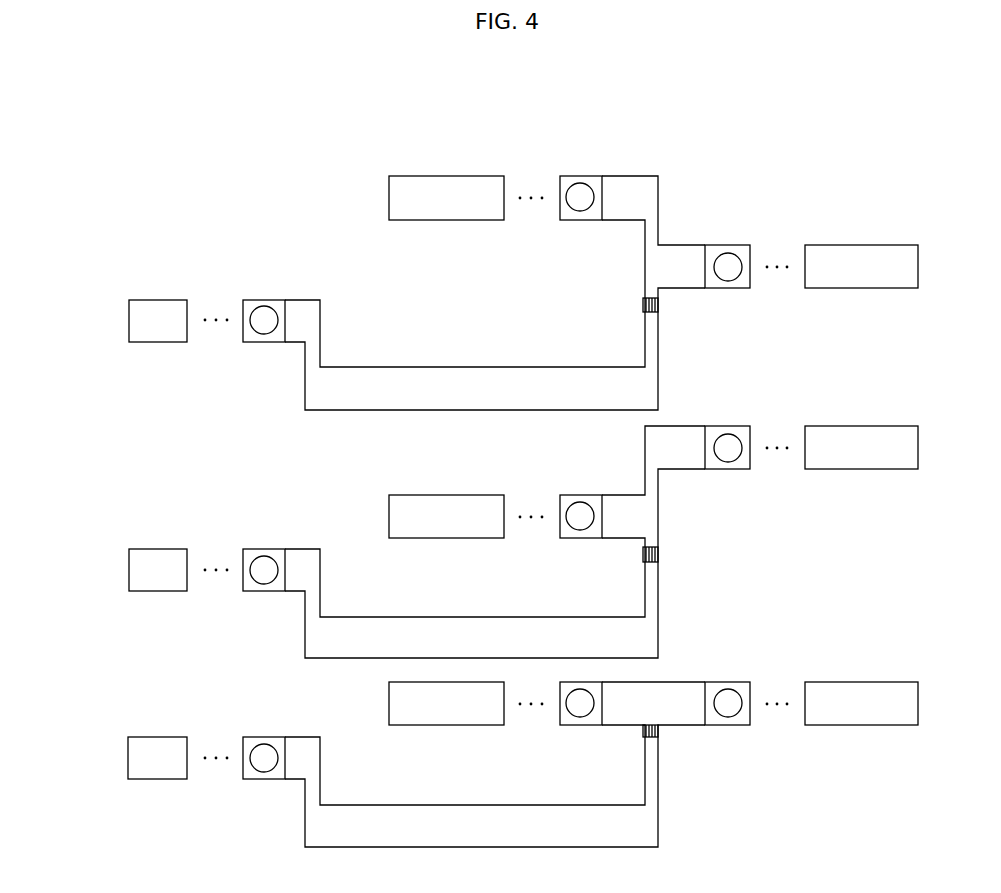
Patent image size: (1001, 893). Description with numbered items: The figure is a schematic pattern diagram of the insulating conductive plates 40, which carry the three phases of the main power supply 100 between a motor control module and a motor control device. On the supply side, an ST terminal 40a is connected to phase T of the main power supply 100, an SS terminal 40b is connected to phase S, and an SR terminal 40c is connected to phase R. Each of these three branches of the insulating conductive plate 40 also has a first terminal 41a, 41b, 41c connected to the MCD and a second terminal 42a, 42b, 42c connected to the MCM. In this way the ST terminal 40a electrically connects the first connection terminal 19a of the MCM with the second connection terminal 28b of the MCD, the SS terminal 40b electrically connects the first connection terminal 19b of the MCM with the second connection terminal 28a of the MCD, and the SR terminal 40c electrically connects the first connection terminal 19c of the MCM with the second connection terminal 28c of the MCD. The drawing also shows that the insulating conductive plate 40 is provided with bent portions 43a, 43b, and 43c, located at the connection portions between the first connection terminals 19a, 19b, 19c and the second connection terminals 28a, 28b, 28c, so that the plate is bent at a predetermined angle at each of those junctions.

The insulating conductive plate 40 is at (687, 155).
The main power supply 100 is at (102, 320).
The ST terminal 40a is at (264, 330).
The SS terminal 40b is at (264, 580).
The SR terminal 40c is at (264, 767).
The first connection terminal 1 19a is at (421, 198).
The first connection terminal 2 19b is at (421, 516).
The first connection terminal 3 19c is at (421, 703).
The second terminal 42a is at (580, 206).
The second terminal 42b is at (580, 525).
The second terminal 42c is at (580, 712).
The first terminal 41a is at (728, 260).
The first terminal 41b is at (728, 441).
The first terminal 41c is at (728, 697).
The bent portion 43a is at (660, 306).
The bent portion 43b is at (660, 556).
The bent portion 43c is at (660, 733).
The second connection terminal 2 28b is at (889, 266).
The second connection terminal 1 28a is at (889, 447).
The second connection terminal 3 28c is at (888, 703).